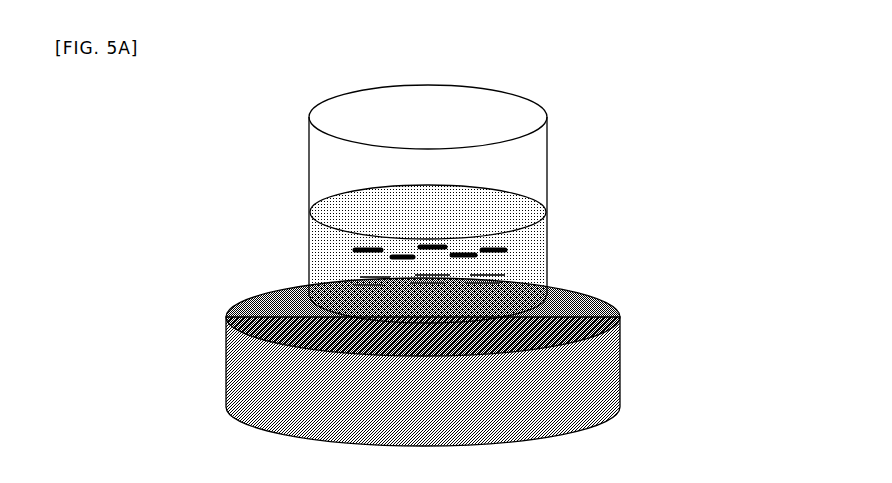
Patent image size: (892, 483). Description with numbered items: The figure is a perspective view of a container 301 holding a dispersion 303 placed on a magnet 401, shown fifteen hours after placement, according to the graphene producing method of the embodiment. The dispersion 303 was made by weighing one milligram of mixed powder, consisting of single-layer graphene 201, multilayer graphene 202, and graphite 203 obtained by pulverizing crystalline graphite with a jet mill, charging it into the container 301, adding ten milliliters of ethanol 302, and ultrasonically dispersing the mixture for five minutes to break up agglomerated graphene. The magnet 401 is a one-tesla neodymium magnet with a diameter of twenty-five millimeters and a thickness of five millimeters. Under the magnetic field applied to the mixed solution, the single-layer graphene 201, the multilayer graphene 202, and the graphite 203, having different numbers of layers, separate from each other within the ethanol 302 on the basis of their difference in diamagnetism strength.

The container 301 is at (308, 125).
The ethanol 302 is at (507, 213).
The single-layer graphene 201 is at (492, 248).
The multilayer graphene 202 is at (505, 278).
The graphite 203 is at (505, 308).
The dispersion 303 is at (712, 178).
The magnet 401 is at (247, 297).